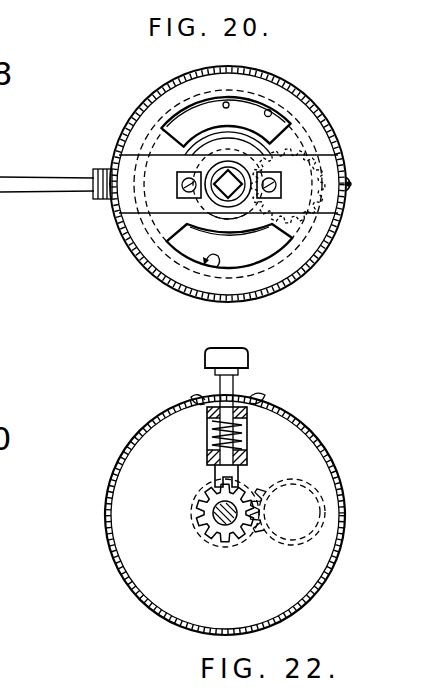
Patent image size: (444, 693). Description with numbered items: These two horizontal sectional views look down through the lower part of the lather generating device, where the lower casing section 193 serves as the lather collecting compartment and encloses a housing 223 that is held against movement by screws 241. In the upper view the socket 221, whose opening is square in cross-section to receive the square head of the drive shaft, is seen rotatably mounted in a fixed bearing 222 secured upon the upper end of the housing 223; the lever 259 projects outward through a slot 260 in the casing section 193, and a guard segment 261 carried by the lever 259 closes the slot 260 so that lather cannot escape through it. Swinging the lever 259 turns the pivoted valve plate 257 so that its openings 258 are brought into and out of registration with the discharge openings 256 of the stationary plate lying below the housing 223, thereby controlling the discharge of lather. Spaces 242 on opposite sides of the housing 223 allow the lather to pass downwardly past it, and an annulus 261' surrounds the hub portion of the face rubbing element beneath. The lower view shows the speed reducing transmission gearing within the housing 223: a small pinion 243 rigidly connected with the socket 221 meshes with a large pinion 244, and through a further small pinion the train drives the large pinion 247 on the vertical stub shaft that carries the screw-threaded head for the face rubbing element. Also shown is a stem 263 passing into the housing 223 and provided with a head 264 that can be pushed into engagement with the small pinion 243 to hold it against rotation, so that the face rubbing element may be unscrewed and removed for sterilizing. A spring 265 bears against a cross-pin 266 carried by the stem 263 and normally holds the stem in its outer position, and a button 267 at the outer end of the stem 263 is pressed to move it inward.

In FIG. 20, the lower casing section 193 is at (339, 236).
In FIG. 20, the socket 221 is at (232, 180).
In FIG. 20, the fixed bearing 222 is at (235, 215).
In FIG. 20, the housing 223 is at (148, 158).
In FIG. 20, the screws 241 is at (352, 182).
In FIG. 20, the spaces 242 is at (194, 134).
In FIG. 22, the small pinion 243 is at (198, 521).
In FIG. 20, the large pinion 244 is at (300, 222).
In FIG. 22, the large pinion 244 is at (300, 544).
In FIG. 22, the large pinion 247 is at (210, 548).
In FIG. 20, the discharge openings 256 is at (268, 110).
In FIG. 20, the pivoted valve plate 257 is at (200, 214).
In FIG. 20, the openings 258 is at (250, 64).
In FIG. 20, the lever 259 is at (37, 158).
In FIG. 20, the slot 260 is at (160, 252).
In FIG. 20, the guard segment 261 is at (227, 155).
In FIG. 20, the annulus 261' is at (276, 125).
In FIG. 22, the stem 263 is at (236, 392).
In FIG. 22, the head 264 is at (215, 474).
In FIG. 22, the spring 265 is at (207, 427).
In FIG. 22, the cross-pin 266 is at (257, 400).
In FIG. 22, the button 267 is at (248, 364).